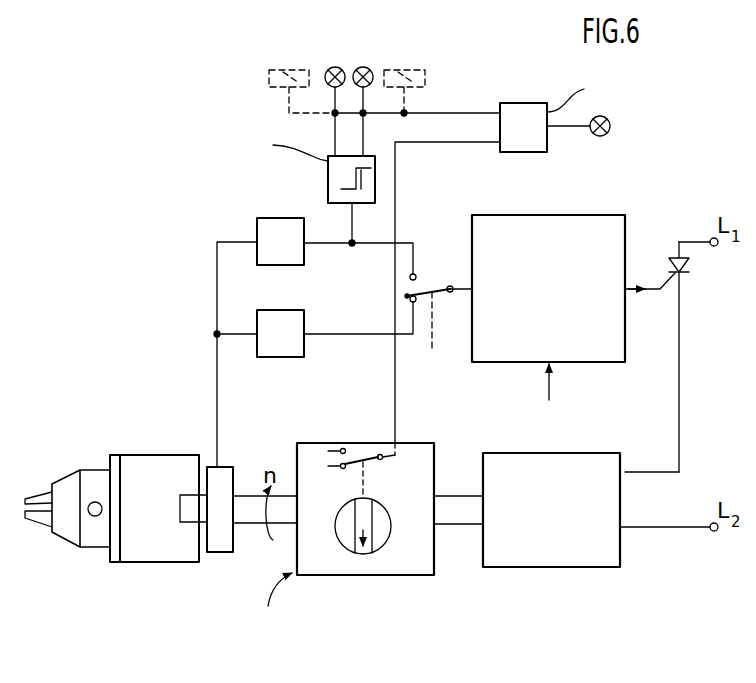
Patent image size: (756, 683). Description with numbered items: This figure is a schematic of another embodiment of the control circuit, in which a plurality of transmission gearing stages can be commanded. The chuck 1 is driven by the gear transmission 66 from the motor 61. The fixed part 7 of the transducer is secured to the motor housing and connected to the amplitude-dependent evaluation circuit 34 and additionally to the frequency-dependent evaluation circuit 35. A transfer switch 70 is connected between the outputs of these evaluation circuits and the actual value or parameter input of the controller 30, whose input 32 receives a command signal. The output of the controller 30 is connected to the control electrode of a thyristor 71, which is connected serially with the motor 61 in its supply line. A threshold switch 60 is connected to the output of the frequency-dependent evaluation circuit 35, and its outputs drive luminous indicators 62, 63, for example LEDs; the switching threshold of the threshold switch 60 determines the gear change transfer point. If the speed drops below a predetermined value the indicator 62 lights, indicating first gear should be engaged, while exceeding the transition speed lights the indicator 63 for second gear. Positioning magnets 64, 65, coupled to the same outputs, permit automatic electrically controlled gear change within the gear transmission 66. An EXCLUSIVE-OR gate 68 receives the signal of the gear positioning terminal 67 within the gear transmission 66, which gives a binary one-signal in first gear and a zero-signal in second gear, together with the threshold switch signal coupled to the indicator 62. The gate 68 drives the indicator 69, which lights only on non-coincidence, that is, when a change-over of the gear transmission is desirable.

The chuck 1 is at (157, 550).
The fixed part of the transducer 7 is at (221, 545).
The controller 30 is at (551, 223).
The input 32 is at (550, 387).
The amplitude-dependent evaluation circuit 34 is at (279, 316).
The frequency-dependent evaluation circuit 35 is at (277, 223).
The threshold switch 60 is at (328, 177).
The motor 61 is at (551, 463).
The luminous indicator 62 is at (363, 65).
The luminous indicator 63 is at (334, 65).
The positioning magnet 64 is at (414, 63).
The positioning magnet 65 is at (291, 62).
The gear transmission 66 is at (408, 563).
The gear positioning terminal 67 is at (362, 444).
The EXCLUSIVE-OR gate 68 is at (520, 103).
The indicator 69 is at (610, 126).
The transfer switch 70 is at (432, 281).
The thyristor 71 is at (668, 266).